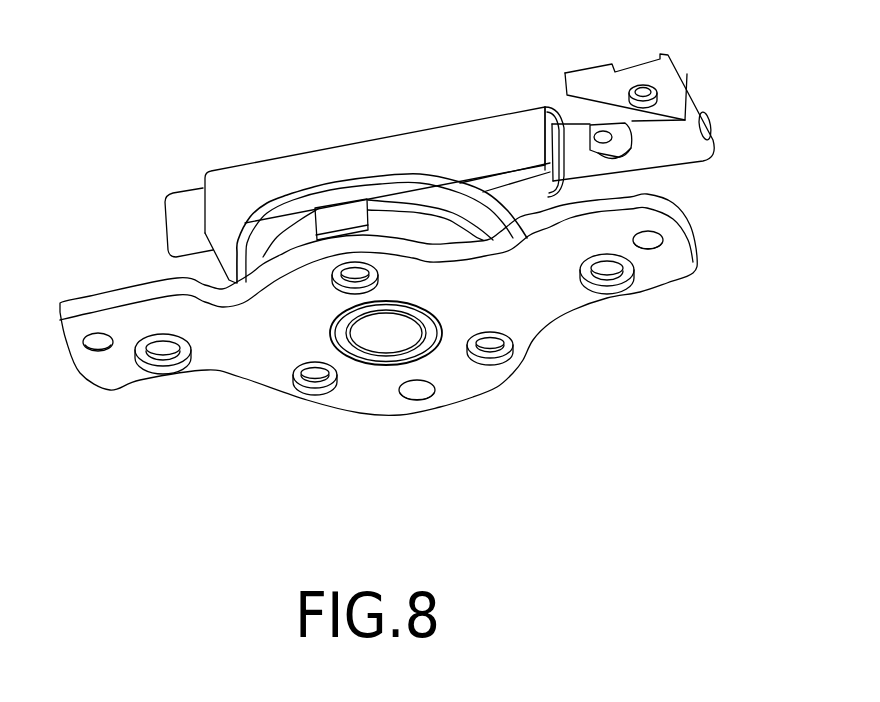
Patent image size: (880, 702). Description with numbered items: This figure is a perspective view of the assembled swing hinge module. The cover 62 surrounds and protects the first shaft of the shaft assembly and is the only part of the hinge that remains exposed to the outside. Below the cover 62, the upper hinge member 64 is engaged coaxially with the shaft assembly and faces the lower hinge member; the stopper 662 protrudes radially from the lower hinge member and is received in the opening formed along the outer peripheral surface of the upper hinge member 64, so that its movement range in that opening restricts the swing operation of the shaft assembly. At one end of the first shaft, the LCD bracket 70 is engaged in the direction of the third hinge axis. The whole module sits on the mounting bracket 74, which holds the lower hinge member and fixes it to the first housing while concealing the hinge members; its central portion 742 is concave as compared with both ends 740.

The cover 62 is at (473, 133).
The upper hinge member 64 is at (388, 195).
The stopper 662 is at (337, 213).
The LCD bracket 70 is at (693, 100).
The mounting bracket 74 is at (336, 428).
The both ends of the mounting bracket 740 is at (120, 380).
The central portion of the mounting bracket 742 is at (470, 383).